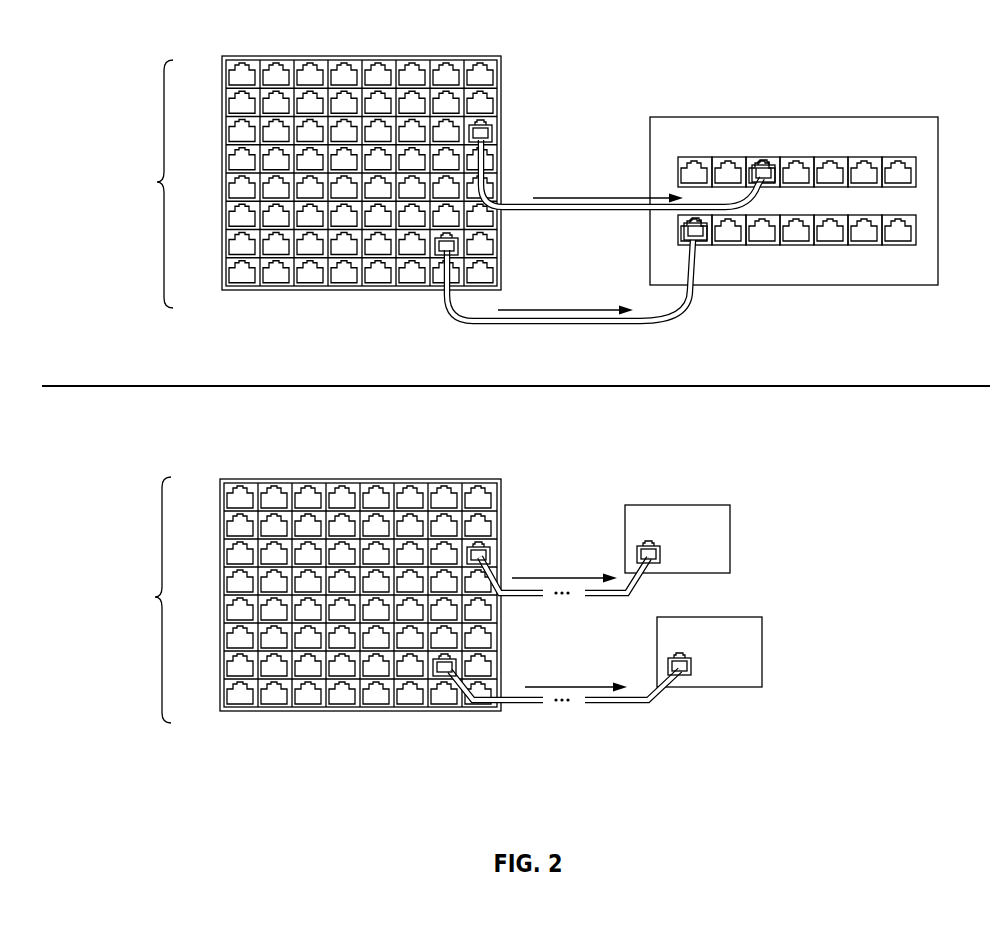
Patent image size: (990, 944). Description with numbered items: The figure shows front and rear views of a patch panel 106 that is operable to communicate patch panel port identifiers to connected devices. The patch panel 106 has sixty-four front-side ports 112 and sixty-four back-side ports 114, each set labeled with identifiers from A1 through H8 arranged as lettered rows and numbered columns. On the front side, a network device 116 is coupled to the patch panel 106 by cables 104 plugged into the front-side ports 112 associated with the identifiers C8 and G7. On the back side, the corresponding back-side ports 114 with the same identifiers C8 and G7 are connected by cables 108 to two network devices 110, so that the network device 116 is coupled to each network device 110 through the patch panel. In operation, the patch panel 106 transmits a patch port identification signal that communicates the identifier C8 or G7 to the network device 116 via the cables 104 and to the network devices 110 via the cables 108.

The cable 104 is at (605, 237).
The patch panel 106 is at (312, 56).
The cable 108 is at (562, 638).
The network device 110 is at (700, 582).
The front-side ports 112 is at (103, 184).
The back-side ports 114 is at (102, 600).
The network device 116 is at (811, 117).